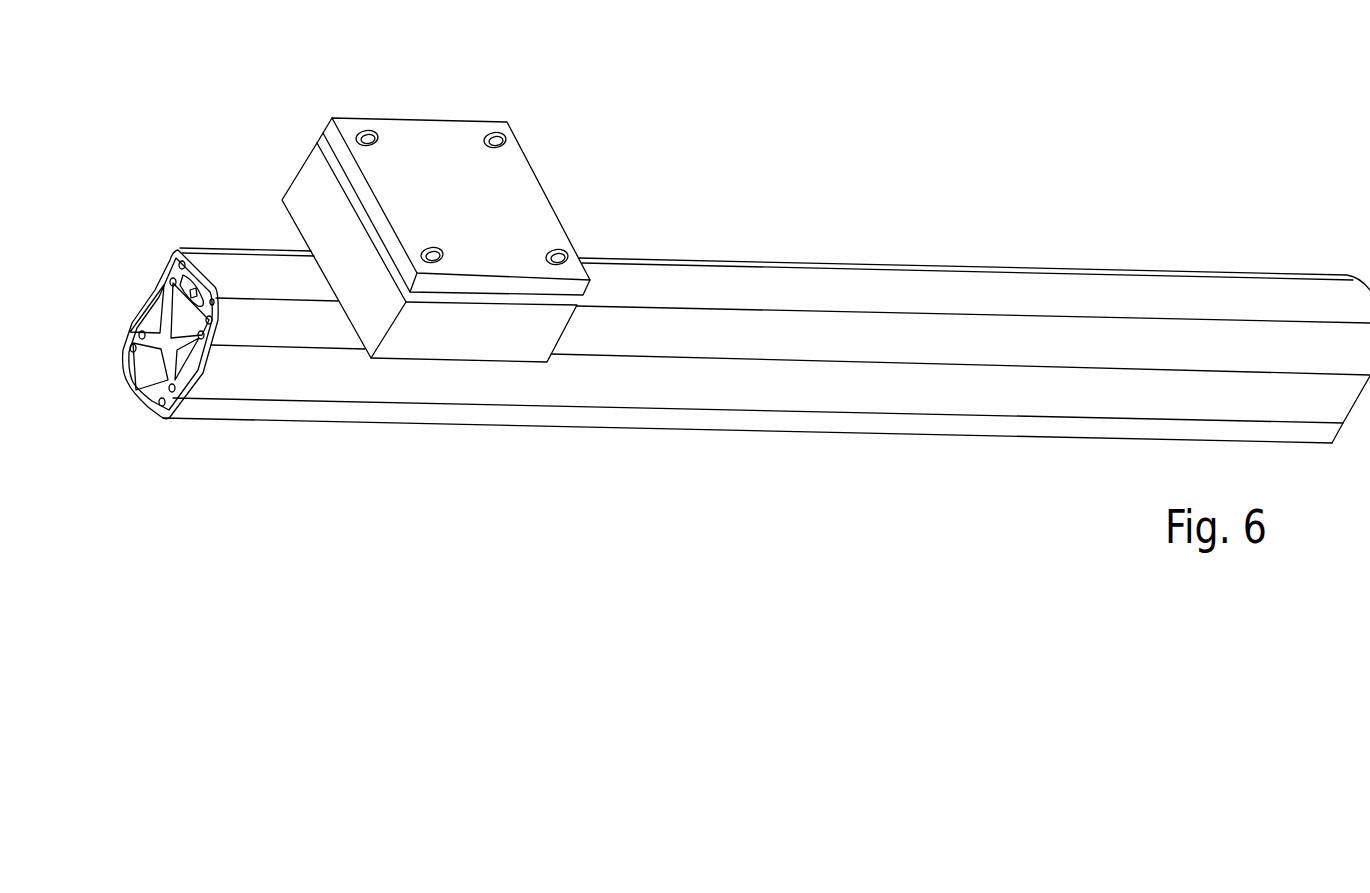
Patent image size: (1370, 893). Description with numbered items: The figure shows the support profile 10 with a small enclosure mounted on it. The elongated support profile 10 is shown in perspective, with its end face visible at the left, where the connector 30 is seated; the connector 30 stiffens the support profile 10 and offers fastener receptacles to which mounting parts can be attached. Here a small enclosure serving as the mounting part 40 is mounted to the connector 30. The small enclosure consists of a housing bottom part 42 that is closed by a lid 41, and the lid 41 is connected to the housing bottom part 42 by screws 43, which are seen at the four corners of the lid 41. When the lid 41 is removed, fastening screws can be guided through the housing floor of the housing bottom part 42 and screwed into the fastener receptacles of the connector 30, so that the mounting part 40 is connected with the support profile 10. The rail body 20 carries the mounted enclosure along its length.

The support profile 10 is at (772, 443).
The profile guide rail 20 is at (808, 287).
The connector 30 is at (172, 263).
The mounting part 40 is at (533, 138).
The lid 41 is at (440, 143).
The housing bottom part 42 is at (310, 196).
The screws 43 is at (367, 137).